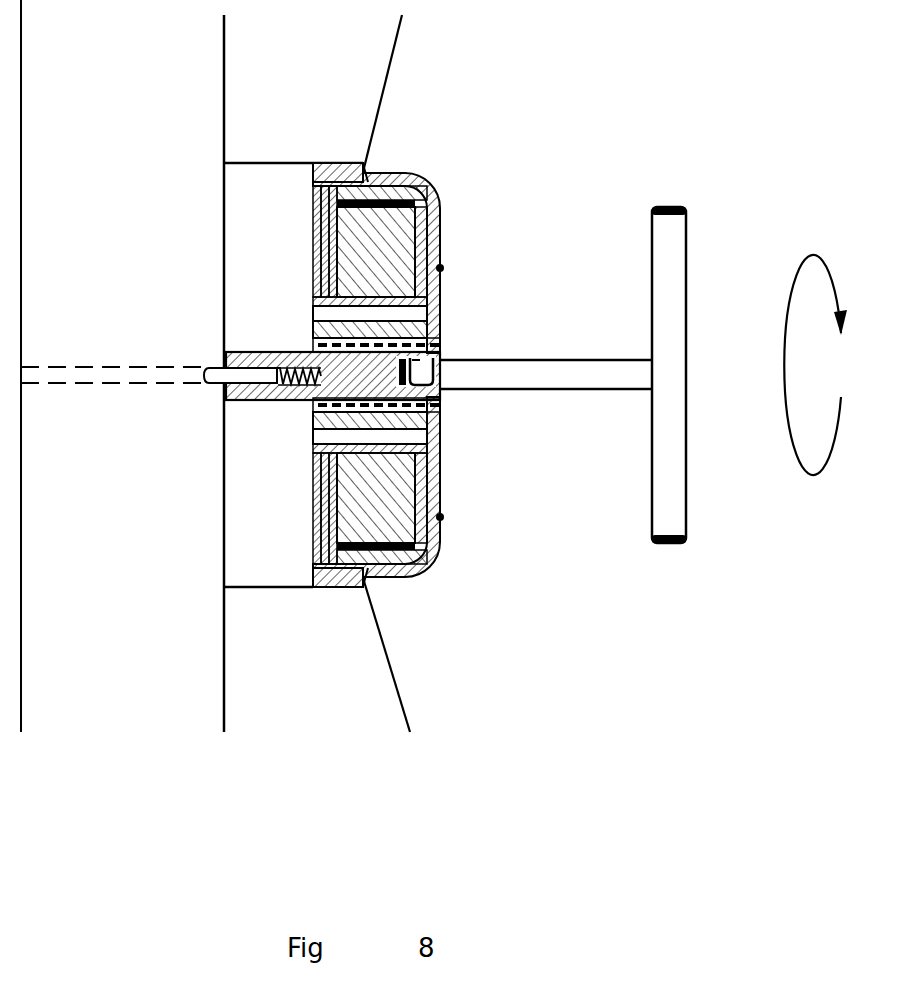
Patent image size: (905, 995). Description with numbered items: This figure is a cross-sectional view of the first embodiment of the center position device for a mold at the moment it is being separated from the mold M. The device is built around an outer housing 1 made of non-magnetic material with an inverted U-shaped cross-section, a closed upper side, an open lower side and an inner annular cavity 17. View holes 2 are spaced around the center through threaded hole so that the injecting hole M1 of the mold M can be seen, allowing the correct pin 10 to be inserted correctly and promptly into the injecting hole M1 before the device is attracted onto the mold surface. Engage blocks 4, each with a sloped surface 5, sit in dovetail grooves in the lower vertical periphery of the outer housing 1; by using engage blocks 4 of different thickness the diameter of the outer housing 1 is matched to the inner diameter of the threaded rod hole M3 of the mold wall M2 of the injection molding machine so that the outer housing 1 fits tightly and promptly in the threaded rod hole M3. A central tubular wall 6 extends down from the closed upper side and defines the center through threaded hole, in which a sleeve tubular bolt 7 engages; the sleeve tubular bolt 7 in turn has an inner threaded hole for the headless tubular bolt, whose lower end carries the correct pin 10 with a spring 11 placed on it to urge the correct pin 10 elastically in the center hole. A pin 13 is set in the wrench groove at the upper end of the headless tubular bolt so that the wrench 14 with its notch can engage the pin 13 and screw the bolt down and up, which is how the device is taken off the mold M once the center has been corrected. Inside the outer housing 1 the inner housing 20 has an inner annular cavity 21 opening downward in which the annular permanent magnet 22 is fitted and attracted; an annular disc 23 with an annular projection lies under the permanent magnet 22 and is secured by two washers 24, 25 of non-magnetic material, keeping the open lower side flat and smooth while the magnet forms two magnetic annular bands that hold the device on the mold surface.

The outer housing 1 is at (447, 198).
The view holes 2 is at (333, 313).
The engage blocks 4 is at (335, 163).
The sloped surface 5 is at (367, 173).
The central tubular wall 6 is at (438, 331).
The sleeve tubular bolt 7 is at (445, 418).
The correct pin 10 is at (209, 384).
The spring 11 is at (292, 362).
The pin 13 is at (437, 356).
The wrench 14 is at (573, 364).
The inner annular cavity 17 is at (440, 268).
The inner housing 20 is at (322, 205).
The inner annular cavity 21 is at (340, 216).
The annular permanent magnet 22 is at (440, 236).
The annular disc 23 is at (333, 256).
The washer 24 is at (330, 229).
The washer 25 is at (318, 287).
The mold M is at (217, 60).
The injecting hole M1 is at (73, 378).
The mold wall M2 is at (376, 73).
The threaded rod hole M3 is at (362, 166).